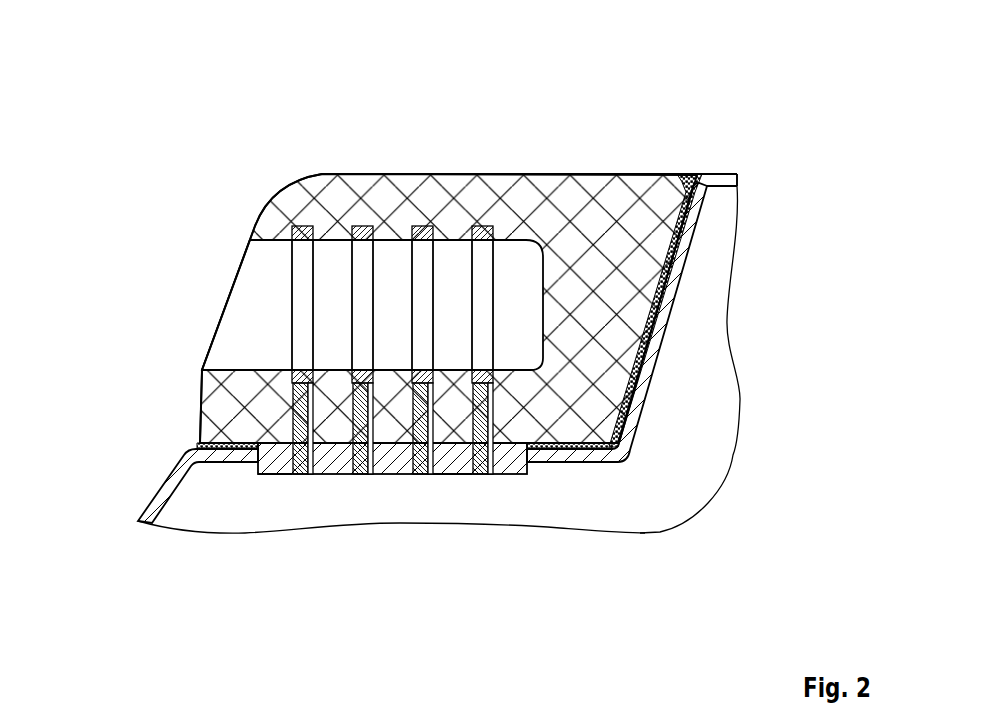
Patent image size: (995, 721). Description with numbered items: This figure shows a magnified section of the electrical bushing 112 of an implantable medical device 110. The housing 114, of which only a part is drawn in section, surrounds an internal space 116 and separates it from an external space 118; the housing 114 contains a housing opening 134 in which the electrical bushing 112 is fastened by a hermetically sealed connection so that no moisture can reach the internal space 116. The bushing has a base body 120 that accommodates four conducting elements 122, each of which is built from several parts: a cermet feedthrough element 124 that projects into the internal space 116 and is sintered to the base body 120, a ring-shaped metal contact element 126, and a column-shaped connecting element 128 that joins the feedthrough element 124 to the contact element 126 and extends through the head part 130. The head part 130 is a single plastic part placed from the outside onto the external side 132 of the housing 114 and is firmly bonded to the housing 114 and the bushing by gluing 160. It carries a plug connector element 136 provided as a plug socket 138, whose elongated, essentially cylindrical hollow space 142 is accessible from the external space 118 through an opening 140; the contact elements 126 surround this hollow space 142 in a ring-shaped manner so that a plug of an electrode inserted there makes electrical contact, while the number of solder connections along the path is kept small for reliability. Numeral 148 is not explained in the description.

The implantable medical device 110 is at (780, 174).
The electrical bushing 112 is at (383, 229).
The housing 114 is at (670, 308).
The internal space 116 is at (437, 301).
The external space 118 is at (122, 507).
The base body 120 is at (450, 407).
The conducting element 122 is at (440, 566).
The feedthrough element 124 is at (482, 476).
The contact element 126 is at (450, 407).
The connecting element 128 is at (492, 383).
The head part 130 is at (195, 266).
The external side 132 is at (718, 168).
The housing opening 134 is at (272, 476).
The plug connector element 136 is at (195, 308).
The plug socket 138 is at (214, 245).
The opening 140 is at (243, 368).
The hollow space 142 is at (272, 318).
The upper molding section 148 is at (418, 170).
The gluing 160 is at (688, 173).